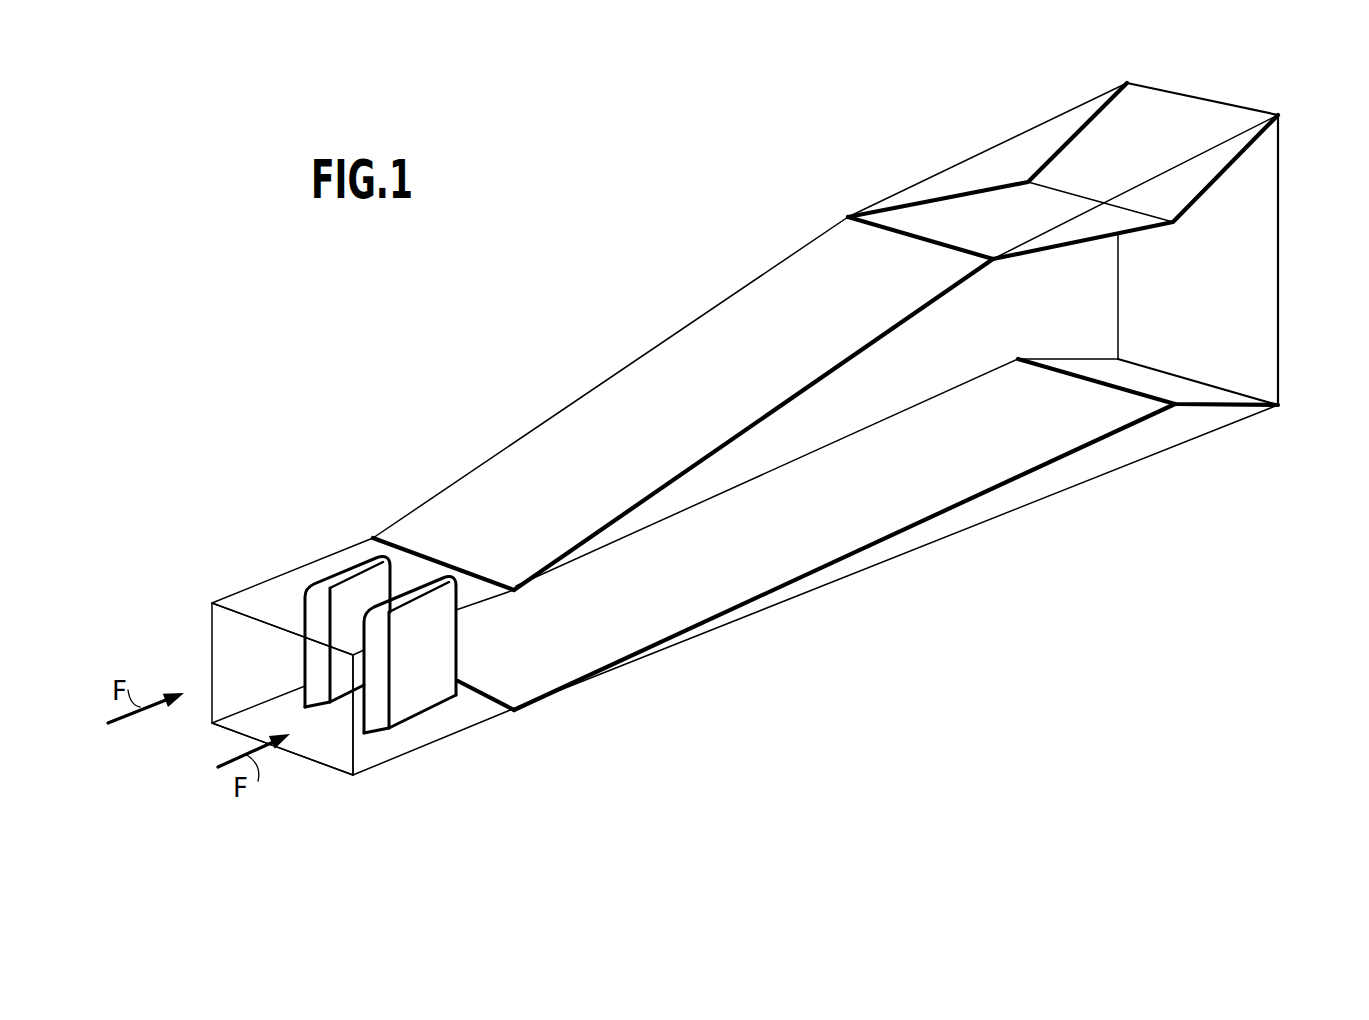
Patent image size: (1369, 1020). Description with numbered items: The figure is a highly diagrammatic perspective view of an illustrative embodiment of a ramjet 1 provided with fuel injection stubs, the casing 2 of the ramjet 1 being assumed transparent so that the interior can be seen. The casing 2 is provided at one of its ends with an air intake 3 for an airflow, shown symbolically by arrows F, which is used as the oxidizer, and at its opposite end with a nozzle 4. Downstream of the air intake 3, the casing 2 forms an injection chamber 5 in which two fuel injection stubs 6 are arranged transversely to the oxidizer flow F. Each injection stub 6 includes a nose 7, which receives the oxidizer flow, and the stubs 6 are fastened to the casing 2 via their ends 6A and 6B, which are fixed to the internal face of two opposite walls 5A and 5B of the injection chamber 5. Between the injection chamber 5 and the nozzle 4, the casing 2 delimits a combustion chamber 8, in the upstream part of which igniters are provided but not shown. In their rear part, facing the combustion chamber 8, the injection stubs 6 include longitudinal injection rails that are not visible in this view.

The ramjet 1 is at (697, 273).
The casing 2 is at (847, 585).
The air intake 3 is at (243, 641).
The nozzle 4 is at (1293, 235).
The injection chamber 5 is at (430, 728).
The wall of the injection chamber 5A is at (272, 593).
The wall of the injection chamber 5B is at (316, 765).
The fuel injection stub 6 is at (417, 685).
The end of injection stub 6A is at (417, 595).
The end of injection stub 6B is at (405, 723).
The nose 7 is at (380, 660).
The combustion chamber 8 is at (877, 467).